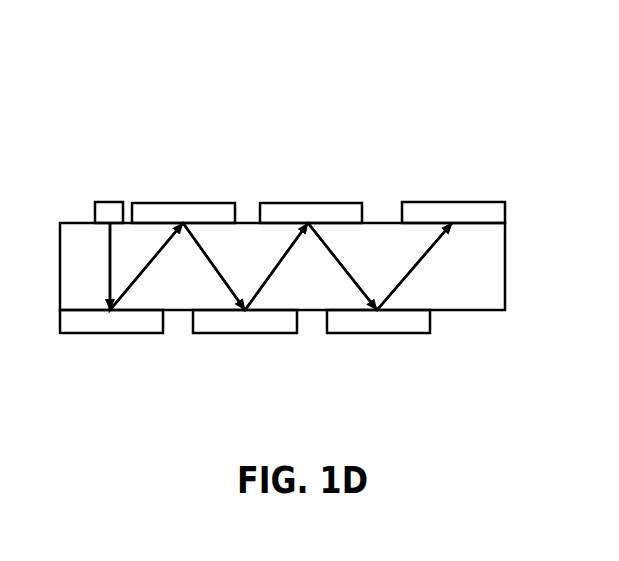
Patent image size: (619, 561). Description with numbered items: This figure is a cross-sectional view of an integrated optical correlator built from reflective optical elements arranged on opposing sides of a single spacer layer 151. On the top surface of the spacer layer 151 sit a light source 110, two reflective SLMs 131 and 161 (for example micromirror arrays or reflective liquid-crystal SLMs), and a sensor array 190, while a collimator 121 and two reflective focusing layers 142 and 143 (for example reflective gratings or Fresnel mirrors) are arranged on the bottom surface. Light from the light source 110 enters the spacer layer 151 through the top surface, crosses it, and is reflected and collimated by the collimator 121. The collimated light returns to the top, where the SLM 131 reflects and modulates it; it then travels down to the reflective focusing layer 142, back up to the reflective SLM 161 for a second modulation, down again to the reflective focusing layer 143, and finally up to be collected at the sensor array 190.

The light source 110 is at (112, 202).
The collimator 121 is at (112, 333).
The reflective SLM 131 is at (183, 203).
The reflective focusing layer 142 is at (237, 333).
The reflective focusing layer 143 is at (377, 333).
The spacer layer 151 is at (505, 268).
The reflective SLM 161 is at (310, 203).
The sensor array 190 is at (452, 202).